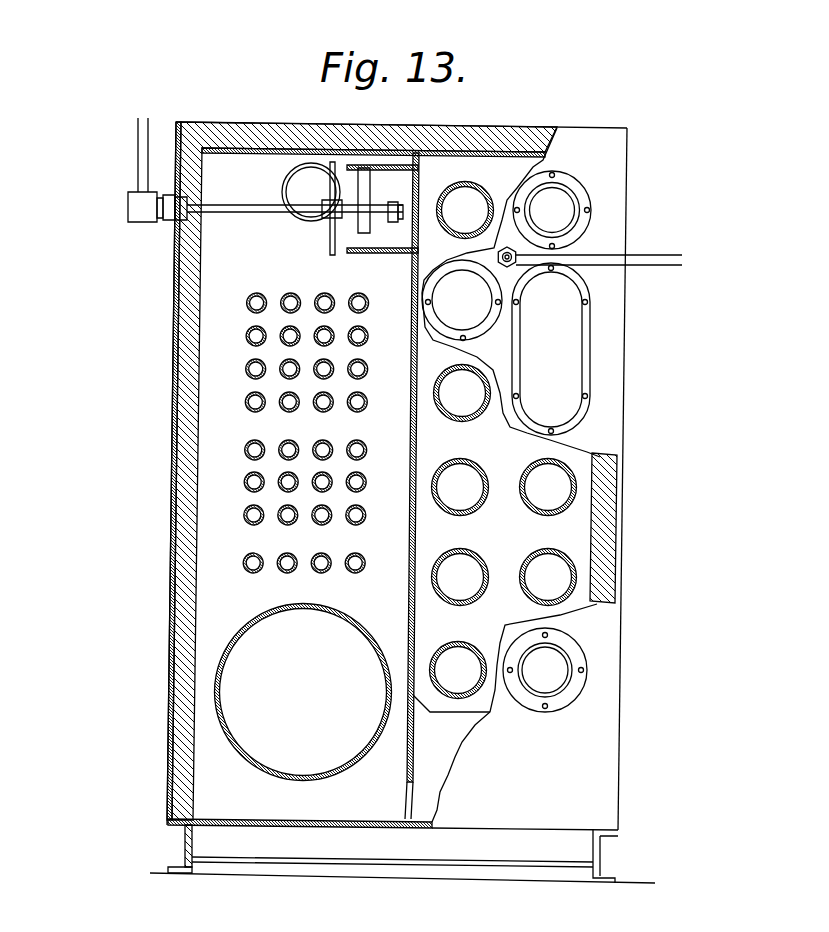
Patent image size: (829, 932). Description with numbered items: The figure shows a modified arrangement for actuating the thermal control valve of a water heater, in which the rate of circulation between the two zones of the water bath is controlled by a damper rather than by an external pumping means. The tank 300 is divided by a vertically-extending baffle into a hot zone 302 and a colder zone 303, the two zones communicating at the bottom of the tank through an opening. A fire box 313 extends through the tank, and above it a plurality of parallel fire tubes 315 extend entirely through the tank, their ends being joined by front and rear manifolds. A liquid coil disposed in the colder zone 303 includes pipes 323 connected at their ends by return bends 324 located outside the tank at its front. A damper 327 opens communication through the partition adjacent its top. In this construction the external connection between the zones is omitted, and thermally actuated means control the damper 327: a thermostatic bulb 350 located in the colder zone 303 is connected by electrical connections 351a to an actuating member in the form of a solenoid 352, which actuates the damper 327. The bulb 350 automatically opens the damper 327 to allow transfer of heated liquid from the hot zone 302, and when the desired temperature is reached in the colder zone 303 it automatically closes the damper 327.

The tank 300 is at (582, 542).
The hot zone 302 is at (213, 790).
The colder zone 303 is at (503, 610).
The fire box 313 is at (228, 700).
The fire tubes 315 is at (243, 510).
The pipes 323 is at (487, 192).
The return bends 324 is at (562, 363).
The damper 327 is at (332, 250).
The thermostatic bulb 350 is at (512, 247).
The electrical connections 351a is at (143, 153).
The solenoid 352 is at (145, 213).